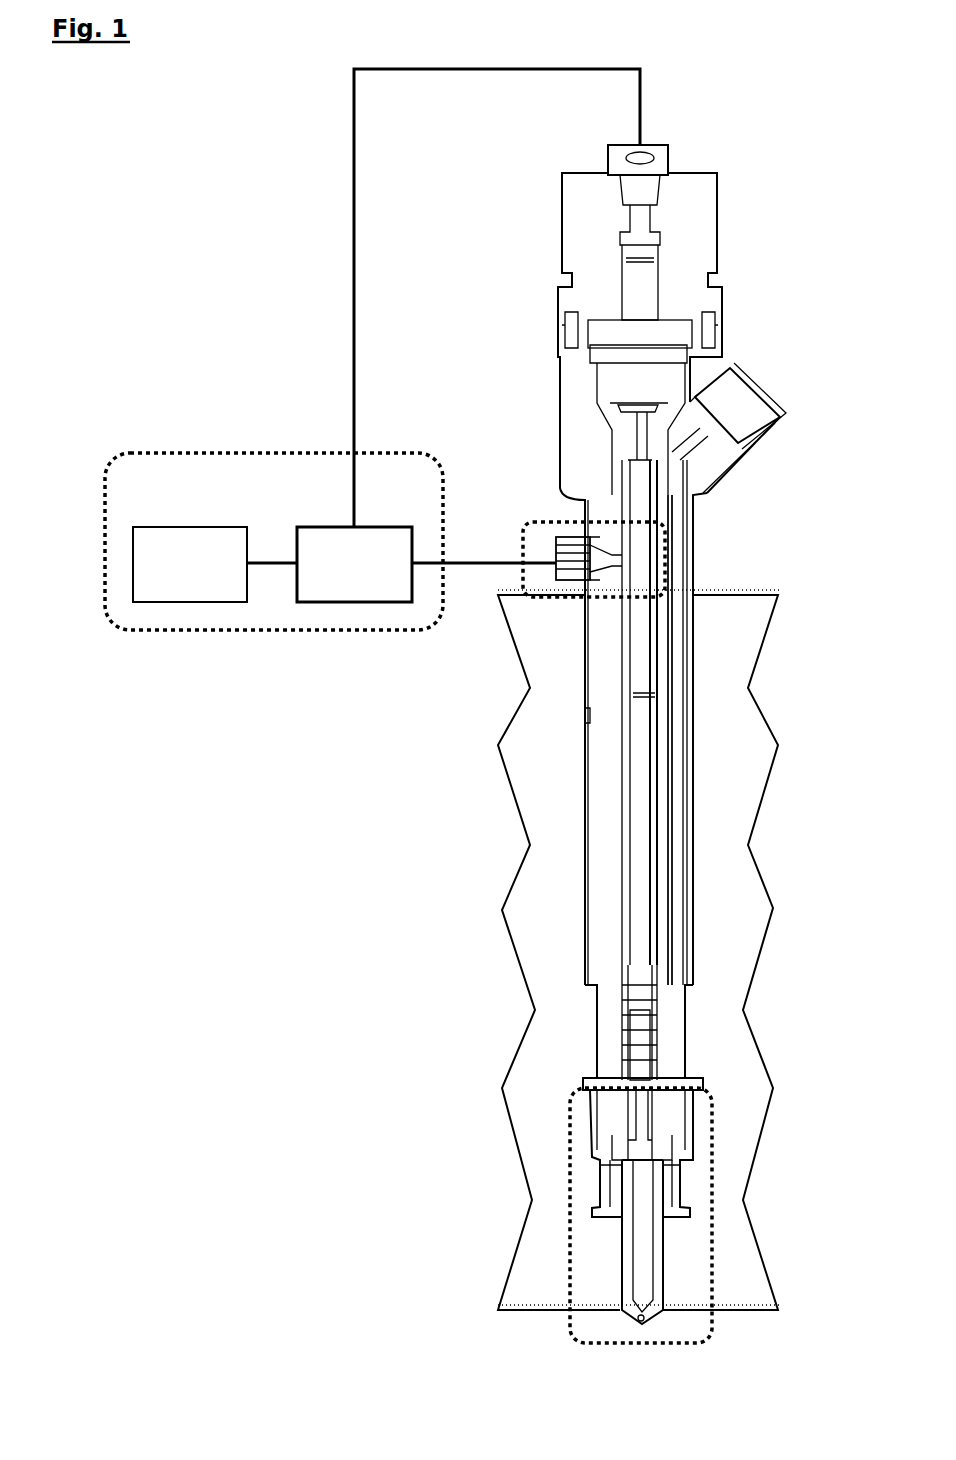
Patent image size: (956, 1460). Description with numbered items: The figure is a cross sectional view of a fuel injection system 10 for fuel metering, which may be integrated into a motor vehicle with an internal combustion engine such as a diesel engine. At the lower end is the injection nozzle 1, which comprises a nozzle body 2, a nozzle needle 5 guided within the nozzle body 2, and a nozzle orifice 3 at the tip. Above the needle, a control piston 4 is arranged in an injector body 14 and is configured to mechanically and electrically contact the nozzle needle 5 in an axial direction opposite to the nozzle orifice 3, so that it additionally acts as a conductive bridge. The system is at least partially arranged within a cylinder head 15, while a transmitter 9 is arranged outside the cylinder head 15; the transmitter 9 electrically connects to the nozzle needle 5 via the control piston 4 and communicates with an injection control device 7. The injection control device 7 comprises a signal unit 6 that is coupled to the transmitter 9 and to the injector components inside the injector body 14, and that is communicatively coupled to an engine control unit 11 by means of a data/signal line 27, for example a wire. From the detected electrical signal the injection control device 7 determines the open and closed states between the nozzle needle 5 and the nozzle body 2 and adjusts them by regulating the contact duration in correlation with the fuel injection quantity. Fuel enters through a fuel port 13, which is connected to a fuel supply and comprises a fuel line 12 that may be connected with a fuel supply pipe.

The injection nozzle 1 is at (633, 1201).
The nozzle body 2 is at (658, 1175).
The nozzle orifice 3 is at (636, 1330).
The control piston 4 is at (643, 729).
The nozzle needle 5 is at (642, 1245).
The signal unit 6 is at (376, 526).
The injection control device 7 is at (274, 585).
The transmitter 9 is at (540, 514).
The fuel injection system 10 is at (250, 96).
The engine control unit 11 is at (161, 526).
The fuel line 12 is at (675, 793).
The fuel port 13 is at (771, 386).
The injector body 14 is at (607, 780).
The cylinder head 15 is at (738, 620).
The data/signal line 27 is at (615, 67).